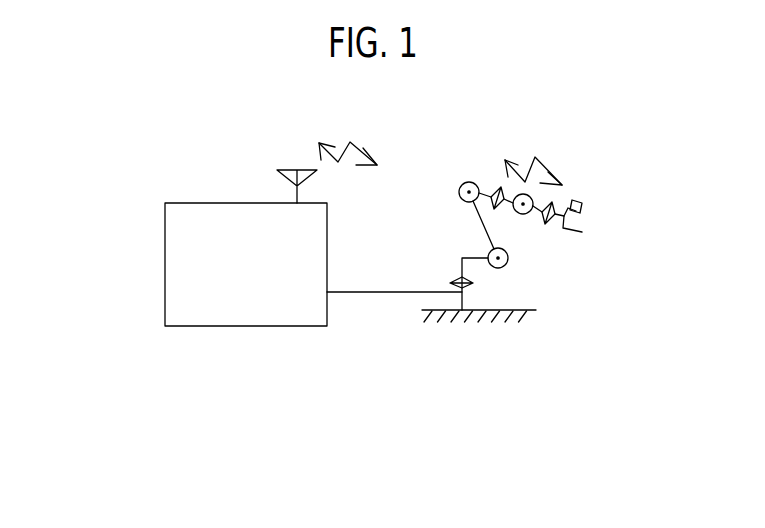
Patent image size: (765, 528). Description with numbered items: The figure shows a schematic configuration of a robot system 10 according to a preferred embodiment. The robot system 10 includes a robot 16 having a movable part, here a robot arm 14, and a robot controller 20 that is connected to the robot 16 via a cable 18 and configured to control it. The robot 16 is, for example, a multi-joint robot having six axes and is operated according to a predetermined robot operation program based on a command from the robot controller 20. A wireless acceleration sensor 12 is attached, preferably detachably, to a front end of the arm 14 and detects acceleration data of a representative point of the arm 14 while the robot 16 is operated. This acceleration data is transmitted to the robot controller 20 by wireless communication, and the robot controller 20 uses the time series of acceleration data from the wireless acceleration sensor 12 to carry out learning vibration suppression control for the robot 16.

The robot system 10 is at (128, 147).
The wireless acceleration sensor 12 is at (590, 203).
The movable part 14 is at (590, 223).
The robot 16 is at (533, 285).
The cable 18 is at (355, 293).
The robot controller 20 is at (193, 352).